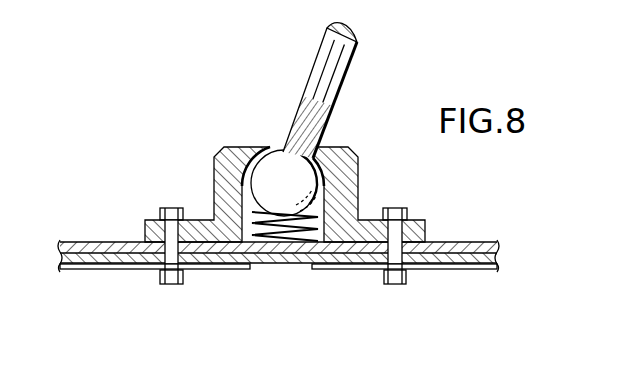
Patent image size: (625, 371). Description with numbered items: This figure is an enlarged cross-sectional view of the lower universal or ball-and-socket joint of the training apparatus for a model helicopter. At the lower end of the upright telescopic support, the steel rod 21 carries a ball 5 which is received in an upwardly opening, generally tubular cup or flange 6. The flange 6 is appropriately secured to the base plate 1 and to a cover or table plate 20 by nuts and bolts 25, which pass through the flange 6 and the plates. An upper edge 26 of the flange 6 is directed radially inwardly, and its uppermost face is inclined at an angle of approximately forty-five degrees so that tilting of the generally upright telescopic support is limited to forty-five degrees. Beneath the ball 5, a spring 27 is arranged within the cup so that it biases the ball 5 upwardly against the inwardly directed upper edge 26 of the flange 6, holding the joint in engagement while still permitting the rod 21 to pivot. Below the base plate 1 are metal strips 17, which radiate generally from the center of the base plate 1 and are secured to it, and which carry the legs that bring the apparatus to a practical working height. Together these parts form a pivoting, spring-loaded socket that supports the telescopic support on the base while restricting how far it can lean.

The base plate 1 is at (442, 258).
The ball 5 is at (268, 168).
The flange 6 is at (212, 185).
The metal strips 17 is at (320, 272).
The table plate 20 is at (448, 242).
The steel rod 21 is at (323, 68).
The nuts and bolts 25 is at (156, 247).
The upper edge of the flange 26 is at (222, 160).
The spring 27 is at (246, 243).